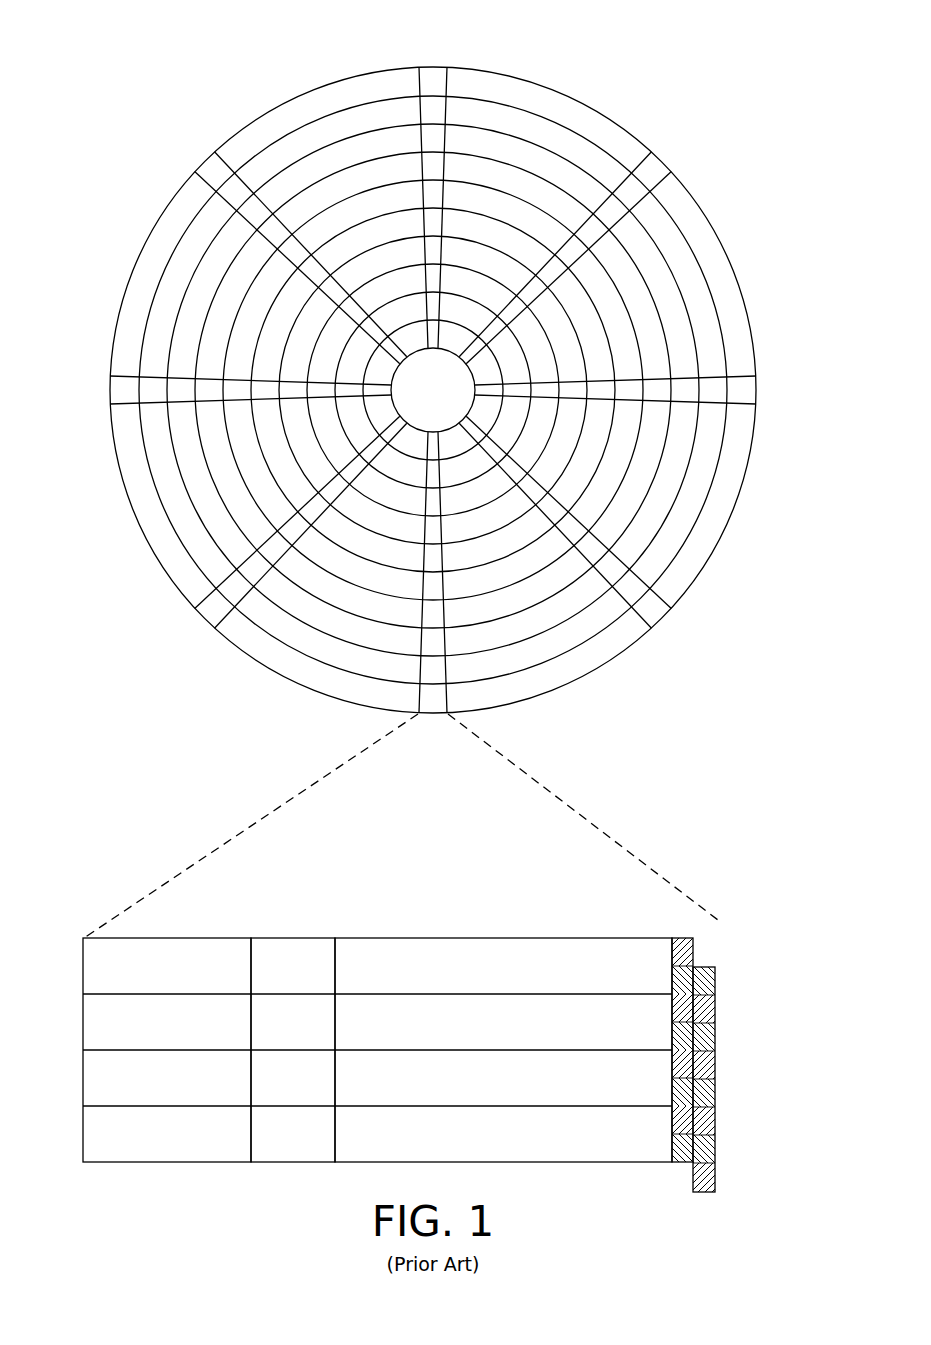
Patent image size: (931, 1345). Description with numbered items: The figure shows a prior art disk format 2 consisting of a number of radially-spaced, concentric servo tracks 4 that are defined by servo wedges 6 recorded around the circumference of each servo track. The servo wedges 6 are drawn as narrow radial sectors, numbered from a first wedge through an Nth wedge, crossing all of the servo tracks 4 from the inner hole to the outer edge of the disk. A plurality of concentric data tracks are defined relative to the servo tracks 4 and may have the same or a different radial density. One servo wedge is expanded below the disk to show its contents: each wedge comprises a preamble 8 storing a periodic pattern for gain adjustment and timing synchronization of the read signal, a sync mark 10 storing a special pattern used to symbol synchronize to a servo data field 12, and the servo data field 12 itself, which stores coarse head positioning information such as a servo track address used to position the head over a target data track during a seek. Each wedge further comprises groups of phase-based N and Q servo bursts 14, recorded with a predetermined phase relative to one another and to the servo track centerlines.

The disk format 2 is at (197, 73).
The servo tracks 4 is at (545, 130).
The servo wedges 6 is at (430, 402).
The preamble 8 is at (173, 937).
The sync mark 10 is at (293, 937).
The servo data field 12 is at (490, 937).
The servo bursts 14 is at (712, 937).